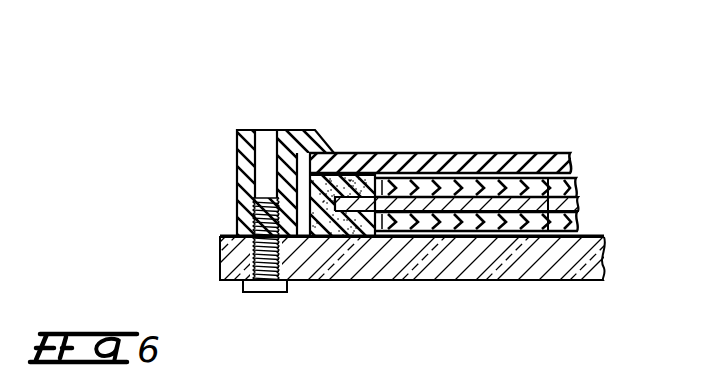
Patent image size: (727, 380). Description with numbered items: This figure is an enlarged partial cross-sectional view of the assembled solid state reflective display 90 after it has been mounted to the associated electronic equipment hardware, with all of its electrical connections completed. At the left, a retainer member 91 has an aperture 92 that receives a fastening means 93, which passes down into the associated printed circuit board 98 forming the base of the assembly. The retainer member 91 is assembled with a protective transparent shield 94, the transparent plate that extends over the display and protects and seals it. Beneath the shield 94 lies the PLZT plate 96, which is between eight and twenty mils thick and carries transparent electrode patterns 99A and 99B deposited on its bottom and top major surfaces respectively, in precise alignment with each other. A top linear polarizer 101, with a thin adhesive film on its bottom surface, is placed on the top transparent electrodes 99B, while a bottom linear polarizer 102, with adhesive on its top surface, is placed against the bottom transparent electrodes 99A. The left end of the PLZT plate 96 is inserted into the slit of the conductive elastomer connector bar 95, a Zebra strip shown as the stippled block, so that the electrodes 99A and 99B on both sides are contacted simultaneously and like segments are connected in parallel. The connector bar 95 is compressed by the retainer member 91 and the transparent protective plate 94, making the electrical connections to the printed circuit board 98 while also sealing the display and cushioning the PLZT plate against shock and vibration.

The solid state reflective display 90 is at (592, 56).
The retainer member 91 is at (237, 146).
The aperture 92 is at (267, 133).
The fastening means 93 is at (274, 293).
The protective transparent shield 94 is at (478, 156).
The conductive elastomer connector bar 95 is at (346, 240).
The PLZT plate 96 is at (577, 201).
The printed circuit board 98 is at (584, 280).
The transparent electrode pattern 99A is at (550, 238).
The transparent electrode pattern 99B is at (552, 237).
The top linear polarizer 101 is at (575, 186).
The bottom linear polarizer 102 is at (576, 228).